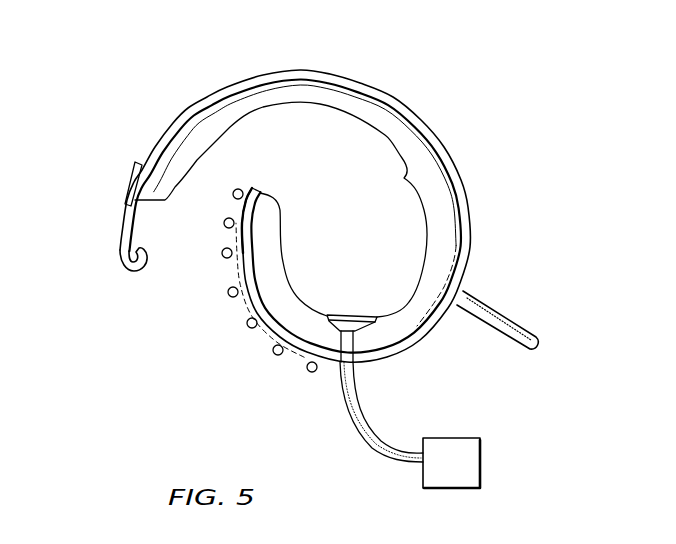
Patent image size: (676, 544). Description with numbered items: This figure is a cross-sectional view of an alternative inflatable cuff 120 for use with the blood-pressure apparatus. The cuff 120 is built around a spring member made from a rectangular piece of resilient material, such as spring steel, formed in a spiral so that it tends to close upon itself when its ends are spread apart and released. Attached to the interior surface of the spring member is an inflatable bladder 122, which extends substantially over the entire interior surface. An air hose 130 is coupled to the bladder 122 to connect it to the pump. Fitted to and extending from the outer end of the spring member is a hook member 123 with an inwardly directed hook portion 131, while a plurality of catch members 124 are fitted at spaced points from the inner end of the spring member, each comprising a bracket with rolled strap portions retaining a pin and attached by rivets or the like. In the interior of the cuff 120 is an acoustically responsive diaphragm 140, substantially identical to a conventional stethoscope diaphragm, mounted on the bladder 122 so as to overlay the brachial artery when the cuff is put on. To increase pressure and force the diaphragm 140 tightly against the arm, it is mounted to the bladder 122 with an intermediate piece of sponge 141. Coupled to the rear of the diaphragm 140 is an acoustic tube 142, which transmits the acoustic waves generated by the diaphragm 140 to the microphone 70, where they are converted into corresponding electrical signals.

The microphone 70 is at (481, 446).
The inflatable cuff 120 is at (289, 59).
The inflatable bladder 122 is at (407, 167).
The hook member 123 is at (128, 200).
The catch members 124 is at (238, 189).
The air hose 130 is at (496, 317).
The hook portion 131 is at (148, 266).
The acoustically responsive diaphragm 140 is at (346, 314).
The intermediate piece of sponge 141 is at (397, 312).
The acoustic tube 142 is at (375, 435).